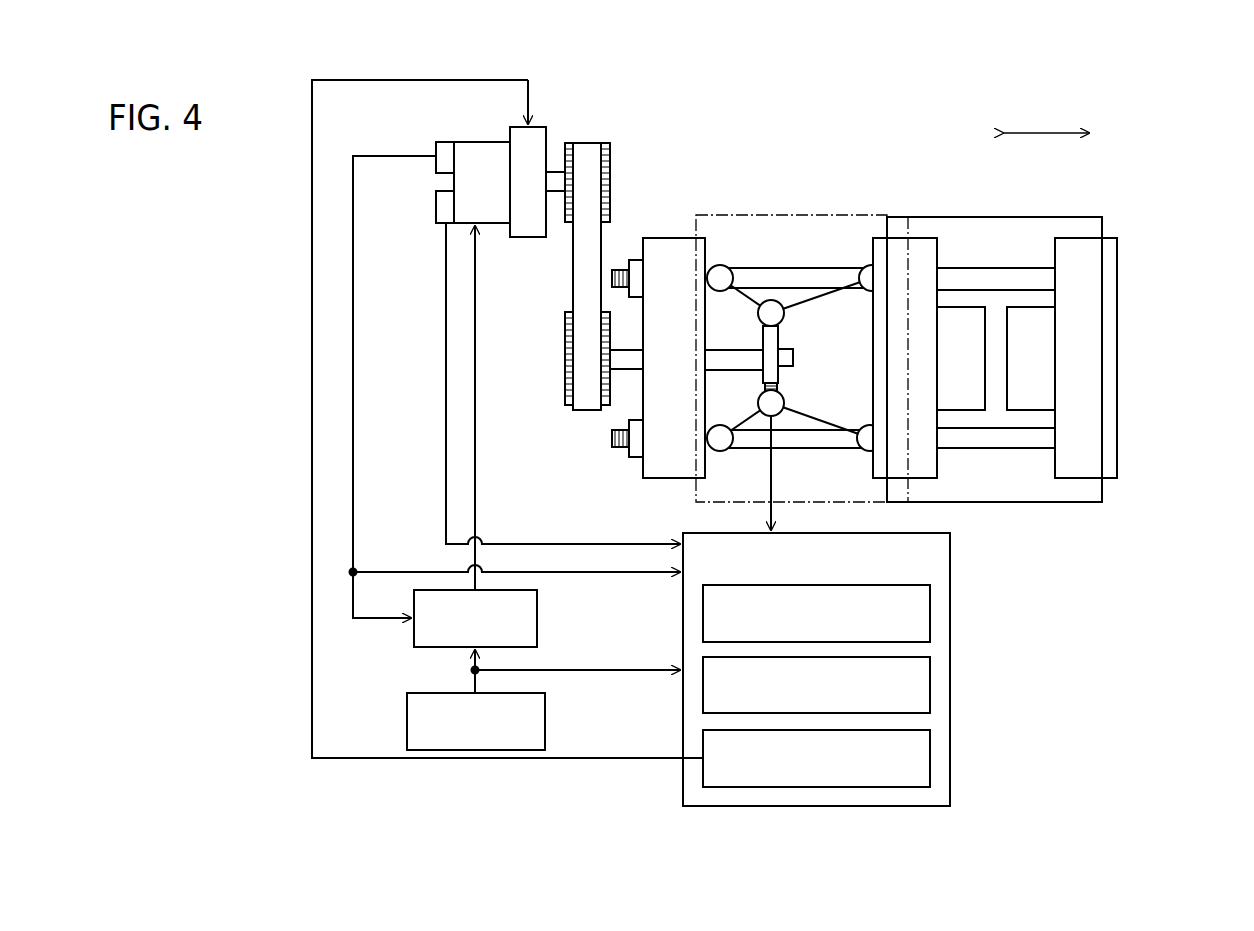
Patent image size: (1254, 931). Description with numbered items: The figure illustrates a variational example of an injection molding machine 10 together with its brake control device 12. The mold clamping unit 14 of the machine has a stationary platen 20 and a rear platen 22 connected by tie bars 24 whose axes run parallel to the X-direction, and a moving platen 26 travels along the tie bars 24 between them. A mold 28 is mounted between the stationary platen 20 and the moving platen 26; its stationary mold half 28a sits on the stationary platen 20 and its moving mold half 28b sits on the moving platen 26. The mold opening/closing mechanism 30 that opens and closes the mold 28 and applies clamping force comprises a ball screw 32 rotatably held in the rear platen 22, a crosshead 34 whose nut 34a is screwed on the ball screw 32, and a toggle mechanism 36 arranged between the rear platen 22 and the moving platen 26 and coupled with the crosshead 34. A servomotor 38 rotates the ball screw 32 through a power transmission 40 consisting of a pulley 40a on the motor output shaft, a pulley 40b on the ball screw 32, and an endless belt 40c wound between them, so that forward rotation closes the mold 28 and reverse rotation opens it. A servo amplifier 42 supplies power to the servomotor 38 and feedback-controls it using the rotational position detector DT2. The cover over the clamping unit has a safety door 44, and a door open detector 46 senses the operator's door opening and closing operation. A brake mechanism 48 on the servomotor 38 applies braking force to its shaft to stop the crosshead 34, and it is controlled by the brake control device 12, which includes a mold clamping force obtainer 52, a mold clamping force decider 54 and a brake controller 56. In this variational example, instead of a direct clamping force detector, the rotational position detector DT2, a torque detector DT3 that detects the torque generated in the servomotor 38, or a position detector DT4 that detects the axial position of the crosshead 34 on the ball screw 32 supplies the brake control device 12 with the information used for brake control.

The injection molding machine 10 is at (574, 92).
The brake control device 12 is at (849, 669).
The mold clamping unit 14 is at (768, 196).
The stationary platen 20 is at (1072, 238).
The rear platen 22 is at (658, 238).
The tie bars 24 is at (783, 275).
The moving platen 26 is at (921, 238).
The mold 28 is at (1090, 355).
The stationary mold half 28a is at (1035, 358).
The moving mold half 28b is at (963, 332).
The mold opening/closing mechanism 30 is at (840, 360).
The ball screw 32 is at (726, 355).
The crosshead 34 is at (780, 341).
The nut 34a is at (795, 360).
The toggle mechanism 36 is at (822, 304).
The servomotor 38 is at (434, 178).
The power transmission 40 is at (590, 245).
The pulley 40a is at (610, 143).
The pulley 40b is at (565, 354).
The endless belt 40c is at (587, 297).
The servo amplifier 42 is at (537, 620).
The safety door 44 is at (812, 215).
The door open detector 46 is at (545, 722).
The brake mechanism 48 is at (536, 237).
The mold clamping force obtainer 52 is at (930, 612).
The mold clamping force decider 54 is at (930, 686).
The brake controller 56 is at (930, 758).
The rotational position detector DT2 is at (436, 142).
The torque detector DT3 is at (436, 207).
The position detector DT4 is at (780, 390).